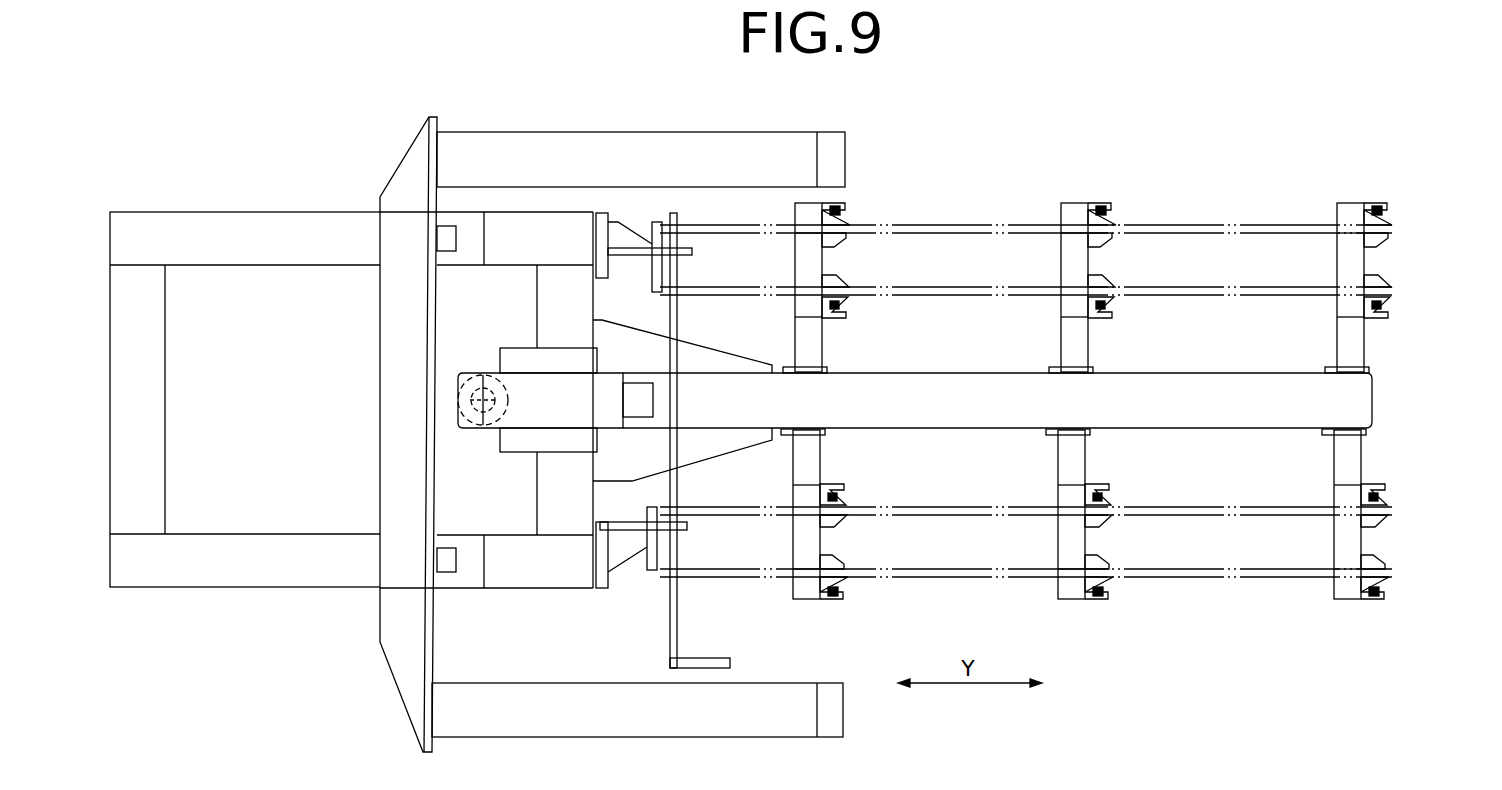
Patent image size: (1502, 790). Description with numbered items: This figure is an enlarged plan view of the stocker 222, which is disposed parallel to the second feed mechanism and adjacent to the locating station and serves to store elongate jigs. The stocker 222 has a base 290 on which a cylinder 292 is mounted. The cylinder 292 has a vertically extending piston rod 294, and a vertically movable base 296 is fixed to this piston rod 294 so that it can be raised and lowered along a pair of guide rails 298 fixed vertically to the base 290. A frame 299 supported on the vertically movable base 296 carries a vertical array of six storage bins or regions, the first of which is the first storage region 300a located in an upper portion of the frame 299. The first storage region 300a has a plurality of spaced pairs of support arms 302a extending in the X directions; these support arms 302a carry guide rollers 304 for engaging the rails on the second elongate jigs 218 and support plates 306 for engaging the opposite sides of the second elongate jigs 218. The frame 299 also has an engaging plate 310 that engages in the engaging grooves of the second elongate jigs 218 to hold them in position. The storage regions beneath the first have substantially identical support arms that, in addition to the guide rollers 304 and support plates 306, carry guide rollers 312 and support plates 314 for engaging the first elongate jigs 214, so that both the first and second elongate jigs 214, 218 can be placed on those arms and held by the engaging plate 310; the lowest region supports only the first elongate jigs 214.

The stocker 222 is at (851, 114).
The base 290 is at (266, 584).
The cylinder 292 is at (492, 377).
The piston rod 294 is at (484, 426).
The vertically movable base 296 is at (523, 578).
The guide rails 298 is at (447, 235).
The frame 299 is at (978, 385).
The first storage region 300a is at (884, 276).
The support arms 302a is at (803, 353).
The guide rollers 304 is at (845, 293).
The support plates 306 is at (826, 309).
The engaging plate 310 is at (678, 628).
The guide rollers 312 is at (842, 213).
The support plates 314 is at (808, 210).
The second elongate jigs 218 is at (1237, 300).
The first elongate jigs 214 is at (1271, 588).